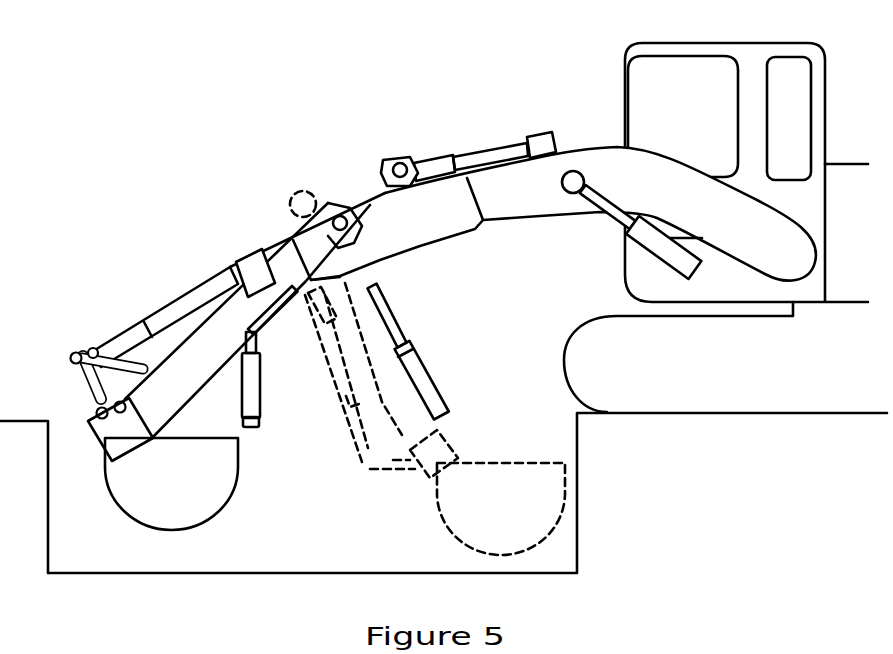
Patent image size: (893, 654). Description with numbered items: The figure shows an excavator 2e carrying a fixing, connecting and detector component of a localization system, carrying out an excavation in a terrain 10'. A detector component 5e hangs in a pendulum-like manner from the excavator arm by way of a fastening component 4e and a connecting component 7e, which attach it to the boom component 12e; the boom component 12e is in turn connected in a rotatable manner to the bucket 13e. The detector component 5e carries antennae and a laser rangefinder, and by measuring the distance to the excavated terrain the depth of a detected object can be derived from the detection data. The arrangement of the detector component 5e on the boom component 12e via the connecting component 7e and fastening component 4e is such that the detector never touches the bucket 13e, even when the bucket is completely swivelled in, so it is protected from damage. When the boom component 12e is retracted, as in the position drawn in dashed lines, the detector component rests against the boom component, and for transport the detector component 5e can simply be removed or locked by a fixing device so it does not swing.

The working machine (excavator) 2e is at (191, 130).
The boom component 12e is at (178, 360).
The fastening component 4e is at (277, 313).
The connecting component 7e is at (260, 363).
The detector component 5e is at (253, 428).
The bucket 13e is at (213, 485).
The terrain 10′ is at (23, 418).